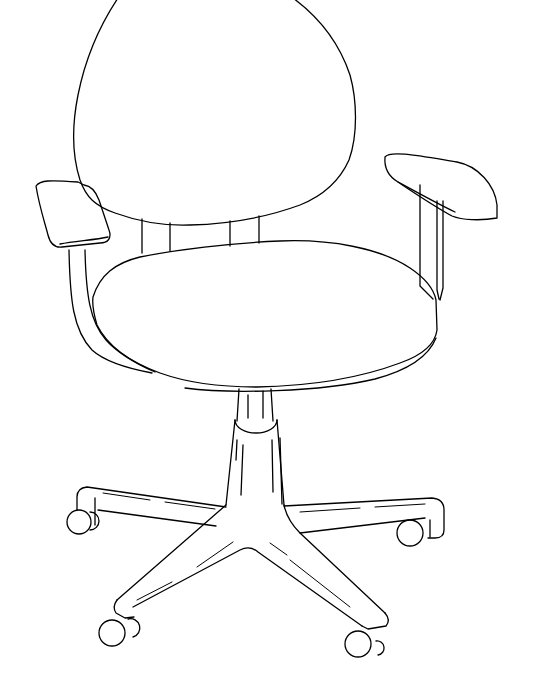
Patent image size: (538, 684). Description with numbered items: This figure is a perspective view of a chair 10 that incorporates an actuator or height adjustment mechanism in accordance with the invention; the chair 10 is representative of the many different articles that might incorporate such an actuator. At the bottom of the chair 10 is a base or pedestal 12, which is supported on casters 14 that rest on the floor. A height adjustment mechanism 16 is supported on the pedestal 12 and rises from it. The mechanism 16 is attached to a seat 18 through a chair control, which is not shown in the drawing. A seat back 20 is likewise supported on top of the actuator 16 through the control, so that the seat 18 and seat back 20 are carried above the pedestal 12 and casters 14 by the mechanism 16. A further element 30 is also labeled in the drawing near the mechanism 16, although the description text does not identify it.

The chair 10 is at (484, 111).
The base or pedestal 12 is at (385, 440).
The casters 14 is at (97, 628).
The height adjustment mechanism 16 is at (207, 424).
The seat 18 is at (438, 307).
The seat back 20 is at (357, 88).
The gas cylinder 30 is at (278, 418).